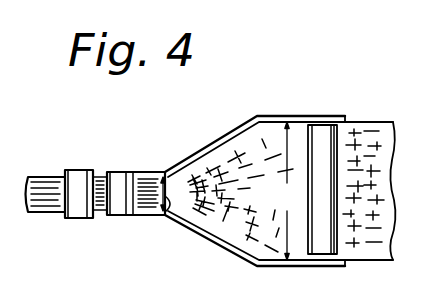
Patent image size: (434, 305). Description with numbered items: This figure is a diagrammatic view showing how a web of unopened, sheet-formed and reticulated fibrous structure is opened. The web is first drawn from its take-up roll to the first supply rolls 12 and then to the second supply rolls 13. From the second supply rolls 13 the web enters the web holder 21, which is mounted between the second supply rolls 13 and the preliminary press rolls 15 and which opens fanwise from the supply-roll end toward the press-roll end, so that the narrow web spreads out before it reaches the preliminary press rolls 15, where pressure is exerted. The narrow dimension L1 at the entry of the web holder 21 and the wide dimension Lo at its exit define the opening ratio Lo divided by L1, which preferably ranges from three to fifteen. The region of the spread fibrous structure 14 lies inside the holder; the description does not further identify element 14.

The first supply rolls 12 is at (77, 176).
The second supply rolls 13 is at (120, 182).
The horn filling 14 is at (262, 148).
The preliminary press rolls 15 is at (322, 130).
The web holder 21 is at (222, 136).
The initial web width L1 is at (164, 215).
The opened web width Lo is at (284, 191).